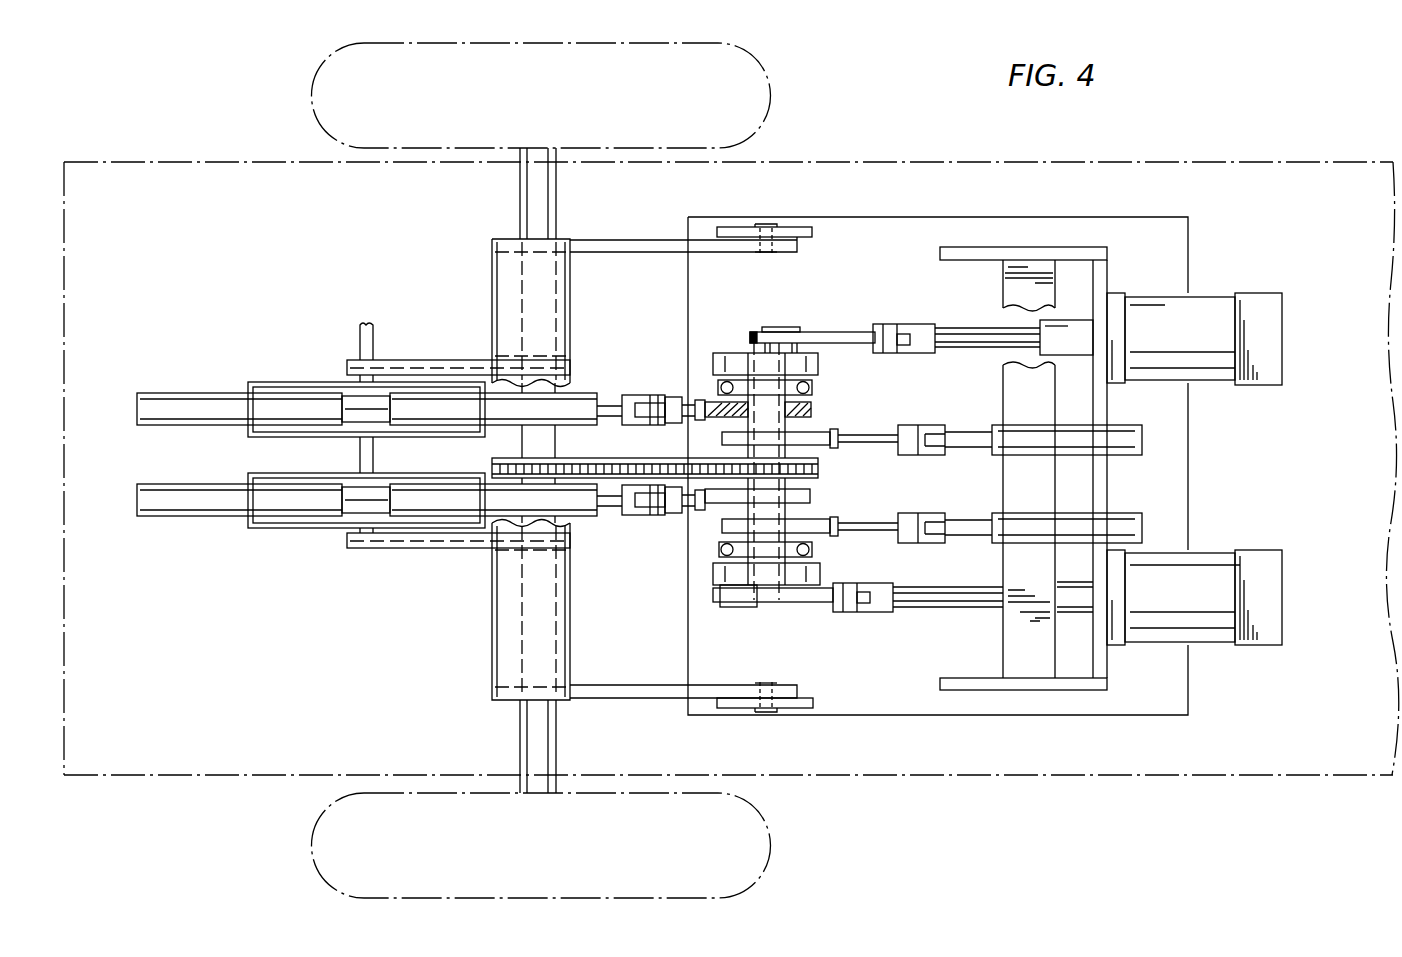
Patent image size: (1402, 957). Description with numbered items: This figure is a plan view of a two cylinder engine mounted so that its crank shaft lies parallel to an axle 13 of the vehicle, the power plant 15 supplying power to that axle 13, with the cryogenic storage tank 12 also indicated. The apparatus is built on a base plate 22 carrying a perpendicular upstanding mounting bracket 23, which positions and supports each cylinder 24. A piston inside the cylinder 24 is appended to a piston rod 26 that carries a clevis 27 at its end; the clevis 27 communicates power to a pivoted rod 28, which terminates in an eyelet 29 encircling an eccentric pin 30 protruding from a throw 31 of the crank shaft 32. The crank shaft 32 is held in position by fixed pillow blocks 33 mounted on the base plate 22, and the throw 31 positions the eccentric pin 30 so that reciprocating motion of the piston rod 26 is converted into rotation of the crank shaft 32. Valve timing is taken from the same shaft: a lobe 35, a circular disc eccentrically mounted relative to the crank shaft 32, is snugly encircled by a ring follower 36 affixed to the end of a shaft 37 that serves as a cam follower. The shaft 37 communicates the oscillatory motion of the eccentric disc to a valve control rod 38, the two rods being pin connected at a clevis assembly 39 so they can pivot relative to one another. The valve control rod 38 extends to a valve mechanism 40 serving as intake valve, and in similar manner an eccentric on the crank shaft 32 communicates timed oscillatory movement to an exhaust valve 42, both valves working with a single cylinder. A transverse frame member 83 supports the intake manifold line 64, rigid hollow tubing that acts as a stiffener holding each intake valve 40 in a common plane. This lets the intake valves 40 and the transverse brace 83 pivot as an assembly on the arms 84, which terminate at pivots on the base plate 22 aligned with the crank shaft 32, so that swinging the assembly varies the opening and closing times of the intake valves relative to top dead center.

The cryogenic storage tank 12 is at (758, 62).
The axle 13 is at (520, 187).
The power plant 15 is at (1197, 235).
The base plate 22 is at (942, 216).
The mounting bracket 23 is at (1116, 249).
The cylinder 24 is at (1215, 295).
The piston rod 26 is at (964, 328).
The clevis 27 is at (918, 324).
The pivoted rod 28 is at (835, 332).
The eyelet 29 is at (750, 337).
The eccentric pin 30 is at (783, 327).
The throw 31 is at (820, 363).
The crank shaft 32 is at (785, 513).
The pillow blocks 33 is at (812, 388).
The lobe 35 is at (795, 418).
The ring follower 36 is at (725, 417).
The shaft 37 is at (707, 402).
The valve control rod 38 is at (605, 400).
The clevis assembly 39 is at (650, 393).
The intake valve mechanism 40 is at (190, 392).
The exhaust valve 42 is at (1018, 422).
The intake manifold line 64 is at (360, 343).
The transverse frame member 83 is at (497, 293).
The arms 84 is at (628, 686).